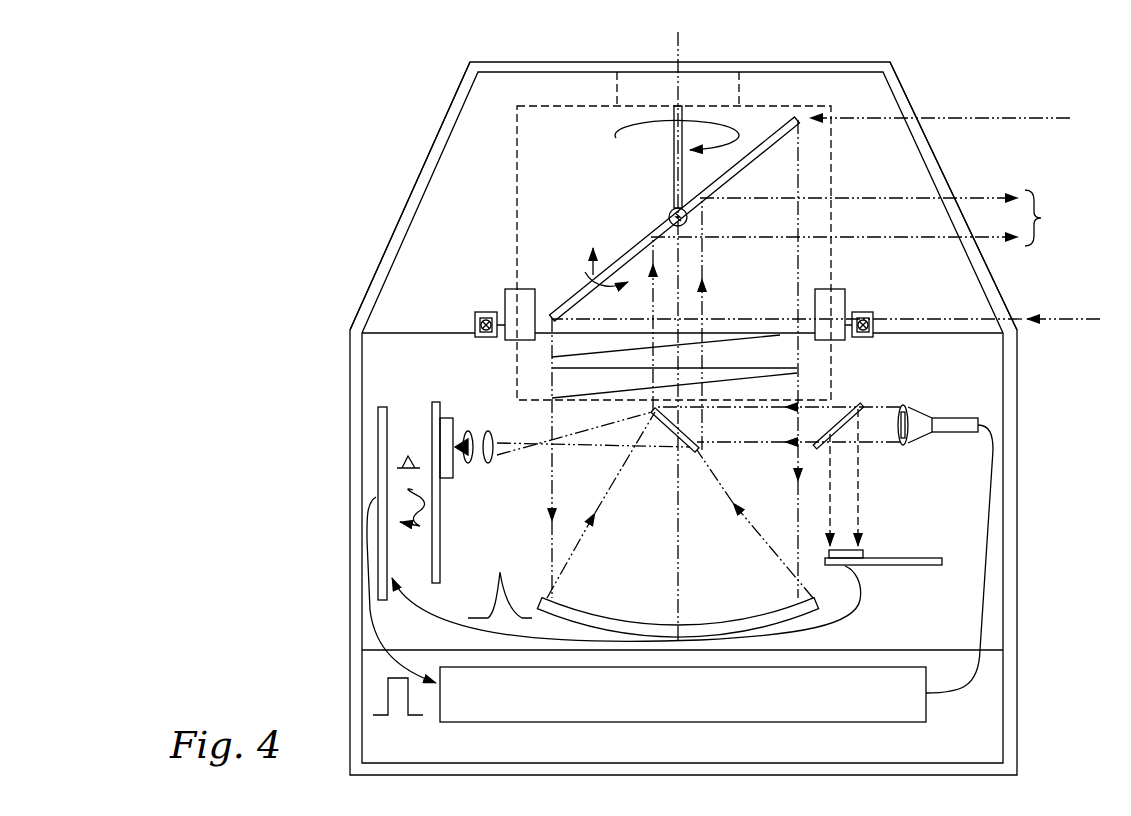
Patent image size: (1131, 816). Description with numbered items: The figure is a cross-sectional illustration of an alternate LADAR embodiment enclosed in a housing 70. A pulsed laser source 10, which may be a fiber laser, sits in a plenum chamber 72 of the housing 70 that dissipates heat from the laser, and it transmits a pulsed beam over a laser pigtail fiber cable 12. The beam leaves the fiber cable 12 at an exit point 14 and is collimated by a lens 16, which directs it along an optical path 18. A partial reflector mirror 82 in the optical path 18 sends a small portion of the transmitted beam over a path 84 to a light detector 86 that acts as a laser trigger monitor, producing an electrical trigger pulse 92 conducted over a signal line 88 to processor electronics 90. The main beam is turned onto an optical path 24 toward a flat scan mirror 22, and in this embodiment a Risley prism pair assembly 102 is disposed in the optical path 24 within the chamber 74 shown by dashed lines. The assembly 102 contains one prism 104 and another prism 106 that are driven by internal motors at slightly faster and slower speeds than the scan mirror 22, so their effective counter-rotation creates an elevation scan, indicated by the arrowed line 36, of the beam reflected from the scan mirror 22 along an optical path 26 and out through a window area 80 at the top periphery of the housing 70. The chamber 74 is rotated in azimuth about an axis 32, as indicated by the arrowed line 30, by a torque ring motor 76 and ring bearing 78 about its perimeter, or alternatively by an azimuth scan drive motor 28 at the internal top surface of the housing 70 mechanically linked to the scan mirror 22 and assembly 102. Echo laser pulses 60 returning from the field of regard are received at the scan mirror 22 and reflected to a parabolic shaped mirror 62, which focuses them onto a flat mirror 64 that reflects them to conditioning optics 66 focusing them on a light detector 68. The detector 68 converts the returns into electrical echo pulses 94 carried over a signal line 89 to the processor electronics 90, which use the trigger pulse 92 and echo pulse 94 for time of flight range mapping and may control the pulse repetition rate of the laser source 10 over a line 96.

The pulsed laser source 10 is at (882, 670).
The laser pigtail fiber cable 12 is at (987, 546).
The exit point 14 is at (915, 435).
The lens 16 is at (904, 405).
The optical path 18 is at (765, 407).
The flat scan mirror 22 is at (627, 255).
The optical path 24 is at (695, 310).
The optical path 26 is at (860, 218).
The azimuth scan drive motor 28 is at (701, 70).
The arrowed line 30 is at (617, 133).
The axis 32 is at (677, 88).
The arrowed line 36 is at (585, 272).
The echo laser pulses 60 is at (1026, 118).
The parabolic shaped mirror 62 is at (762, 614).
The flat mirror 64 is at (665, 420).
The conditioning optics 66 is at (464, 415).
The light detector 68 is at (440, 437).
The housing 70 is at (1018, 612).
The chamber 72 is at (997, 728).
The chamber 74 is at (783, 105).
The torque ring motor 76 is at (502, 286).
The ring bearing 78 is at (472, 318).
The window area 80 is at (406, 196).
The partial reflector mirror 82 is at (843, 430).
The path 84 is at (850, 503).
The light detector 86 is at (907, 565).
The signal line 88 is at (468, 632).
The signal line 89 is at (433, 510).
The processor electronics 90 is at (378, 495).
The electrical trigger pulse 92 is at (490, 600).
The electrical echo pulse 94 is at (398, 460).
The control line 96 is at (358, 598).
The Risley prism pair assembly 102 is at (797, 368).
The prism 104 is at (552, 362).
The prism 106 is at (552, 388).